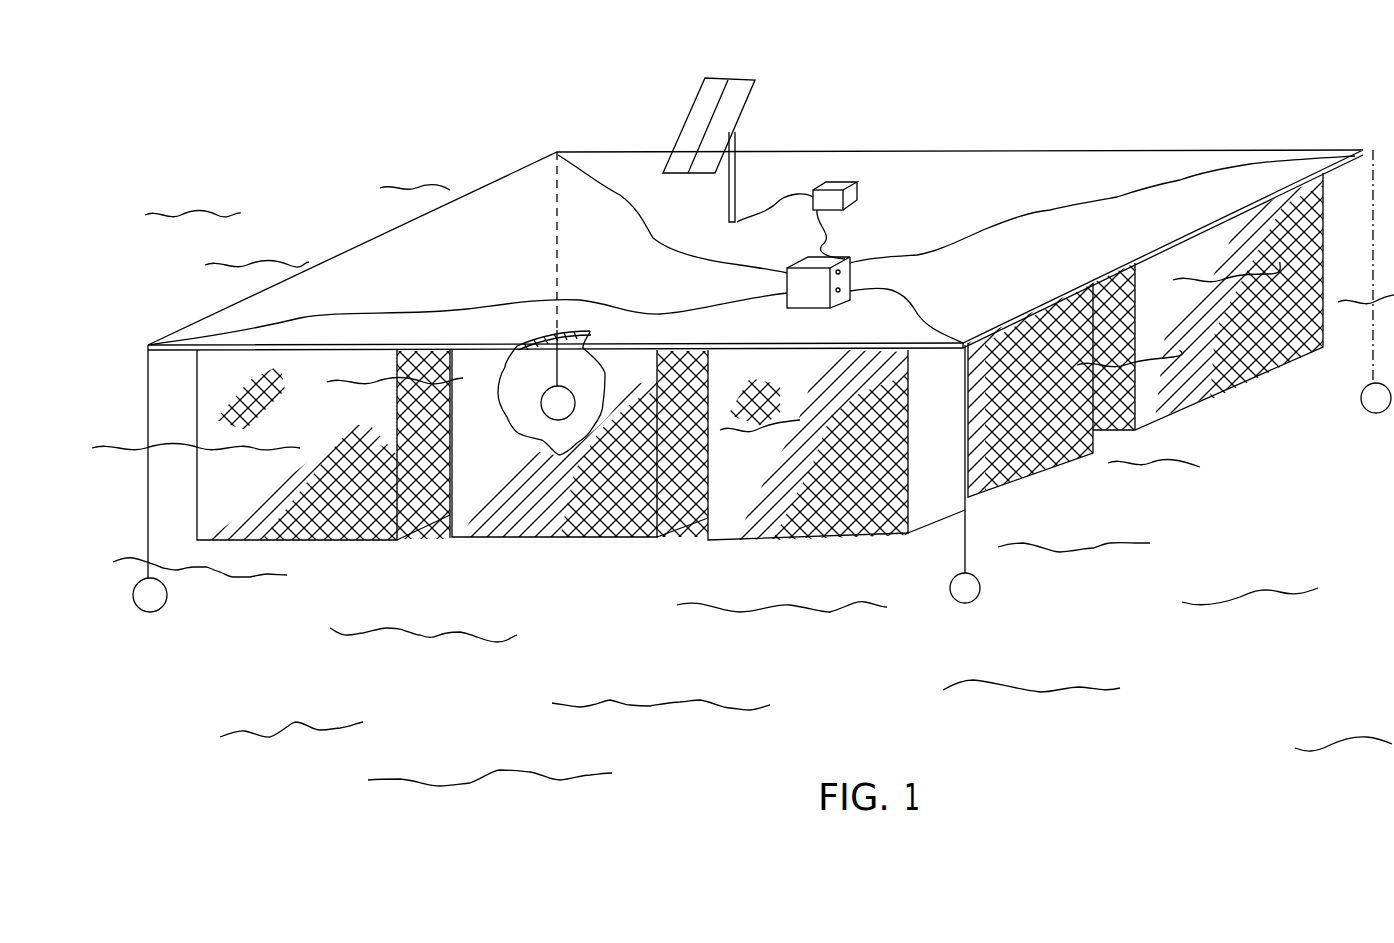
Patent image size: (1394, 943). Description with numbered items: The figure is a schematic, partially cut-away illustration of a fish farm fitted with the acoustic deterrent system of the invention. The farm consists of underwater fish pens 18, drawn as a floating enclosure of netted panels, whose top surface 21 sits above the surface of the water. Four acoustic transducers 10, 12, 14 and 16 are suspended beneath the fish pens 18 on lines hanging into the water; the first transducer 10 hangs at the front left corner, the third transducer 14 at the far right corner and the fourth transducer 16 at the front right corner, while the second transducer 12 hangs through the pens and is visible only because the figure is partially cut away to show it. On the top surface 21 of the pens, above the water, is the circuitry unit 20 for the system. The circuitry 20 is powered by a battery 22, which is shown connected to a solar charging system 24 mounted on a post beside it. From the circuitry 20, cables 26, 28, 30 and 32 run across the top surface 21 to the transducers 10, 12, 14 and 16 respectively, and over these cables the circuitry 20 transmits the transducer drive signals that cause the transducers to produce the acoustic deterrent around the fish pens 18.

The acoustic transducer 10 is at (167, 602).
The acoustic transducer 12 is at (542, 395).
The acoustic transducer 14 is at (1361, 403).
The acoustic transducer 16 is at (981, 590).
The underwater fish pens 18 is at (365, 545).
The circuitry unit 20 is at (840, 256).
The top surface 21 is at (1023, 173).
The battery 22 is at (857, 193).
The solar charging system 24 is at (742, 126).
The cable 26 is at (367, 316).
The cable 28 is at (653, 238).
The cable 30 is at (1098, 212).
The cable 32 is at (930, 312).